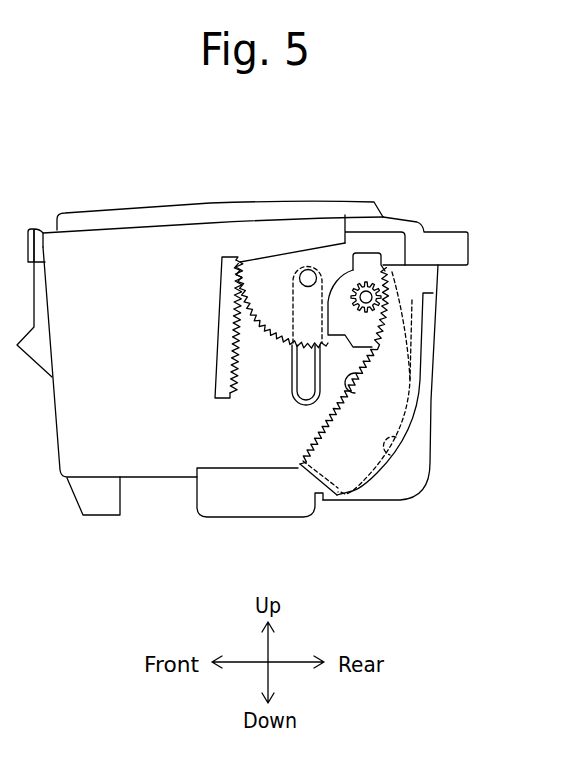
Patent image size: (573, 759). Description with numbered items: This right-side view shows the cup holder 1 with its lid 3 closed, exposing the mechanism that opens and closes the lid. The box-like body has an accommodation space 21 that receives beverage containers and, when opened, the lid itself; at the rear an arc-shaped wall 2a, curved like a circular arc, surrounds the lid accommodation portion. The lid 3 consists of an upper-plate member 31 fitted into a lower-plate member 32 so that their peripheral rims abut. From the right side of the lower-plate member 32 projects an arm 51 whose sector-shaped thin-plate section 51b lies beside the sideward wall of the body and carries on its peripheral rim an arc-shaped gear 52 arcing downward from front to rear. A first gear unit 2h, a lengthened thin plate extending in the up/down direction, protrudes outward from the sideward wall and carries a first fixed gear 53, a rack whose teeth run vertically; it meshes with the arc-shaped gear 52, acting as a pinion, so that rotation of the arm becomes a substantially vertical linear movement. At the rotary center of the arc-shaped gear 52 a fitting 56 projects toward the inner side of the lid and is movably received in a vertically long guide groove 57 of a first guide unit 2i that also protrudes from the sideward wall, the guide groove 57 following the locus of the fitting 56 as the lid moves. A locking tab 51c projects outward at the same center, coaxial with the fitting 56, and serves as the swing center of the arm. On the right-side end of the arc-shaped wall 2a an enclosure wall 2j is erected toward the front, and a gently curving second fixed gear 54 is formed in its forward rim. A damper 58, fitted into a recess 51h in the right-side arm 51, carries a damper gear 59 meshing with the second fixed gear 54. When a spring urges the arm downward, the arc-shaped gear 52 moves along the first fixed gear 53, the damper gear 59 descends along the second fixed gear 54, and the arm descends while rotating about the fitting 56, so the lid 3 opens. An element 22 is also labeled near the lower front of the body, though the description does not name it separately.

The cup holder 1 is at (463, 149).
The arc-shaped wall 2a is at (397, 444).
The first gear unit 2h is at (228, 262).
The first guide unit 2i is at (272, 385).
The enclosure wall 2j is at (351, 457).
The lid 3 is at (116, 216).
The accommodation space 21 is at (187, 265).
The bottom portion 22 is at (153, 462).
The upper-plate member 31 is at (362, 216).
The lower-plate member 32 is at (366, 262).
The arm 51 is at (278, 310).
The sector-shaped thin-plate section 51b is at (257, 292).
The locking tab 51c is at (312, 268).
The recess 51h is at (385, 262).
The arc-shaped gear 52 is at (265, 370).
The first fixed gear 53 is at (240, 380).
The second fixed gear 54 is at (353, 390).
The fitting 56 is at (322, 262).
The guide groove 57 is at (297, 407).
The damper 58 is at (384, 256).
The damper gear 59 is at (383, 297).